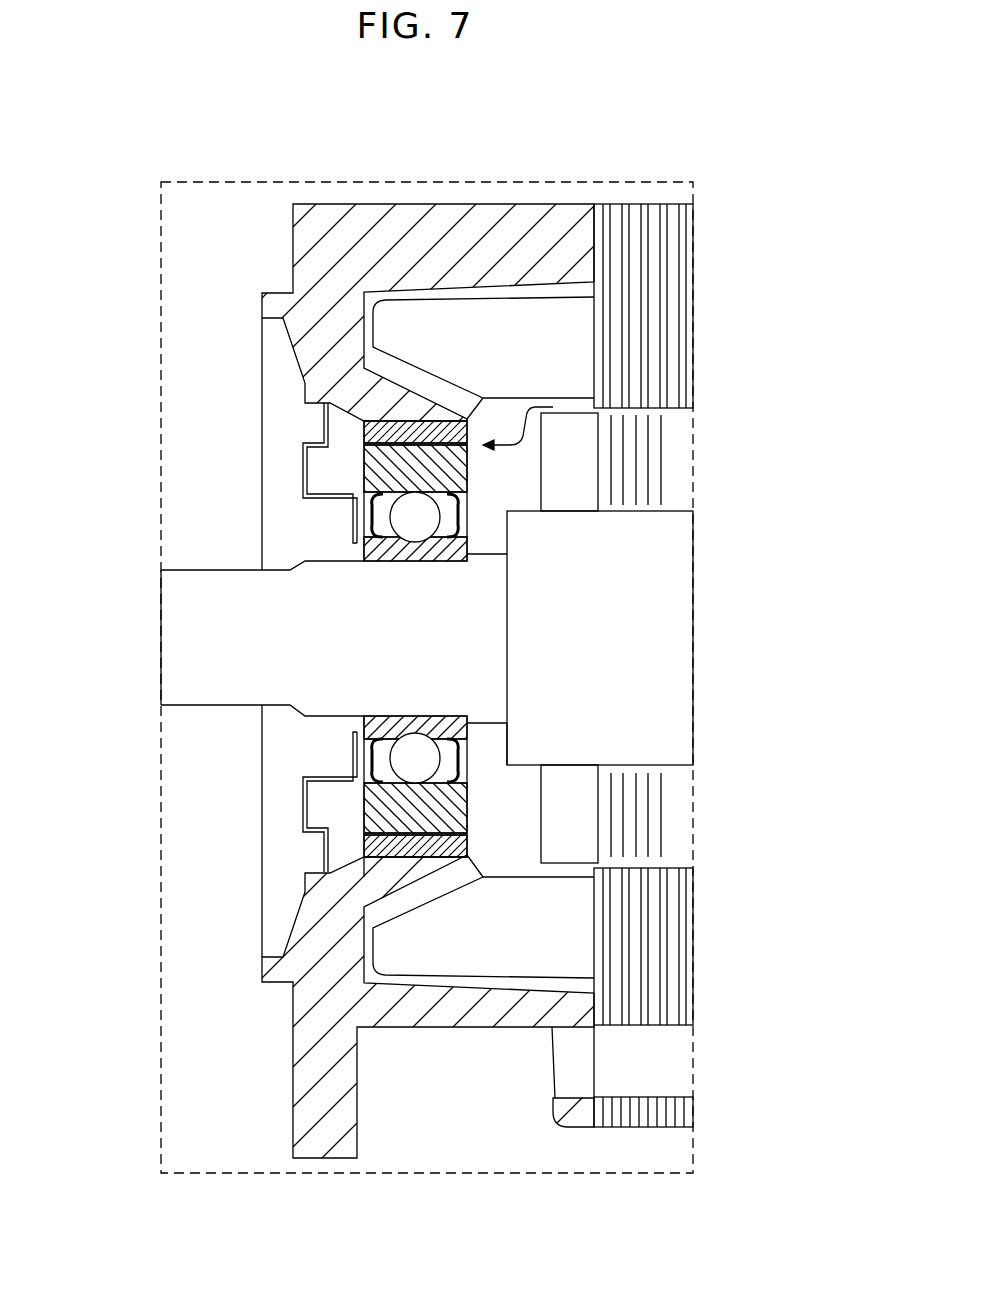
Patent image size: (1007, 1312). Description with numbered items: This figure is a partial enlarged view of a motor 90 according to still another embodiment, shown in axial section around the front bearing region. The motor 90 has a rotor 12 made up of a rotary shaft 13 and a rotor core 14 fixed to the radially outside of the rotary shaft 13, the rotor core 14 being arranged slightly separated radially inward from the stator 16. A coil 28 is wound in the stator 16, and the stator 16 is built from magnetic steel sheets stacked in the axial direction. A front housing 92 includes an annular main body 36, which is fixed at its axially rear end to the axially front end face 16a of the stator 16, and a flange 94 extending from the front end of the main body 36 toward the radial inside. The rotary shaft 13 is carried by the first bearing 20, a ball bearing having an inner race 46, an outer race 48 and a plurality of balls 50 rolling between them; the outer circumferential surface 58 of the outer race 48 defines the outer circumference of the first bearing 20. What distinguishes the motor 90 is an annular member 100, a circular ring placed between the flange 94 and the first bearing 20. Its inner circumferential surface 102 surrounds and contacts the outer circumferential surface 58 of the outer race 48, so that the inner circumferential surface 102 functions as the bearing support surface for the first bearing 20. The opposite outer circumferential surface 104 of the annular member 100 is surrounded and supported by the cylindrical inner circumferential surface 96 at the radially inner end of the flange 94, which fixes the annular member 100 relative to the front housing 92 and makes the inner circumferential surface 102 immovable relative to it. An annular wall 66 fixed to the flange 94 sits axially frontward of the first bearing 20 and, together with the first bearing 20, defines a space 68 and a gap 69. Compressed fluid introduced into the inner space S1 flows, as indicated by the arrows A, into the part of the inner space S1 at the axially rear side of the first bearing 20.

The rotor 12 is at (677, 780).
The rotary shaft 13 is at (188, 568).
The rotor core 14 is at (677, 452).
The stator 16 is at (675, 624).
The axially front end face of the stator 16a is at (592, 240).
The first bearing 20 is at (248, 489).
The coil 28 is at (537, 320).
The annular main body 36 is at (458, 232).
The inner race 46 is at (408, 517).
The outer race 48 is at (370, 432).
The balls 50 is at (368, 468).
The outer circumferential surface of the outer race 58 is at (388, 832).
The annular wall 66 is at (302, 797).
The space 68 is at (338, 793).
The gap 69 is at (353, 836).
The motor 90 is at (813, 100).
The front housing 92 is at (345, 170).
The flange 94 is at (323, 352).
The inner circumferential surface of the flange 96 is at (402, 421).
The annular member 100 is at (356, 840).
The inner circumferential surface of the annular member 102 is at (438, 823).
The outer circumferential surface of the annular member 104 is at (436, 858).
The inner space S1 is at (514, 807).
The arrows A is at (518, 447).